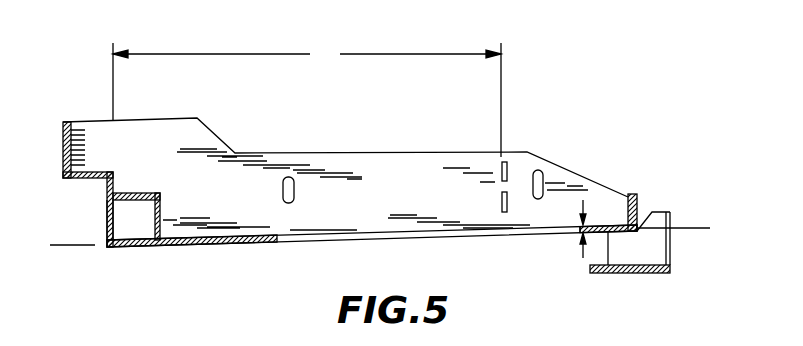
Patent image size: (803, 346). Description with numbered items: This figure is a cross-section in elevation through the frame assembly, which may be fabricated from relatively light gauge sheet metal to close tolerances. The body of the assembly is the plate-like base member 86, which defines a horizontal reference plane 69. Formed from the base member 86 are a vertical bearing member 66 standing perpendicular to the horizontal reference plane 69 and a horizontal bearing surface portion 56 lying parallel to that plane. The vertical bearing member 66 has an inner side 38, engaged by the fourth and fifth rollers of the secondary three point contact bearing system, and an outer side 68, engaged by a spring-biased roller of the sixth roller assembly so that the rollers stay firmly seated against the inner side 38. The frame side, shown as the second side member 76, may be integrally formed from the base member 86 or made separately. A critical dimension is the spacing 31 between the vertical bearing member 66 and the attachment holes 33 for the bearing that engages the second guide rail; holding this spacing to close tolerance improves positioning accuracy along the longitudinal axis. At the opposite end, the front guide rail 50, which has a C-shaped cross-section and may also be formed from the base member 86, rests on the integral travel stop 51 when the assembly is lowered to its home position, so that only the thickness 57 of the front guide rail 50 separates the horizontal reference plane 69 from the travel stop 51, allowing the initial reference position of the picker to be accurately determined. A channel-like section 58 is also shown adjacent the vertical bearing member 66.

The spacing 31 is at (307, 100).
The second side member 76 is at (381, 152).
The attachment holes 33 is at (508, 196).
The horizontal bearing surface portion 56 is at (92, 170).
The inner side 38 is at (113, 182).
The outer side 68 is at (107, 192).
The vertical bearing member 66 is at (107, 222).
The channel box 58 is at (160, 196).
The base member 86 is at (400, 240).
The front guide rail 50 is at (637, 218).
The travel stop 51 is at (668, 216).
The horizontal reference plane 69 is at (688, 232).
The thickness 57 is at (582, 257).